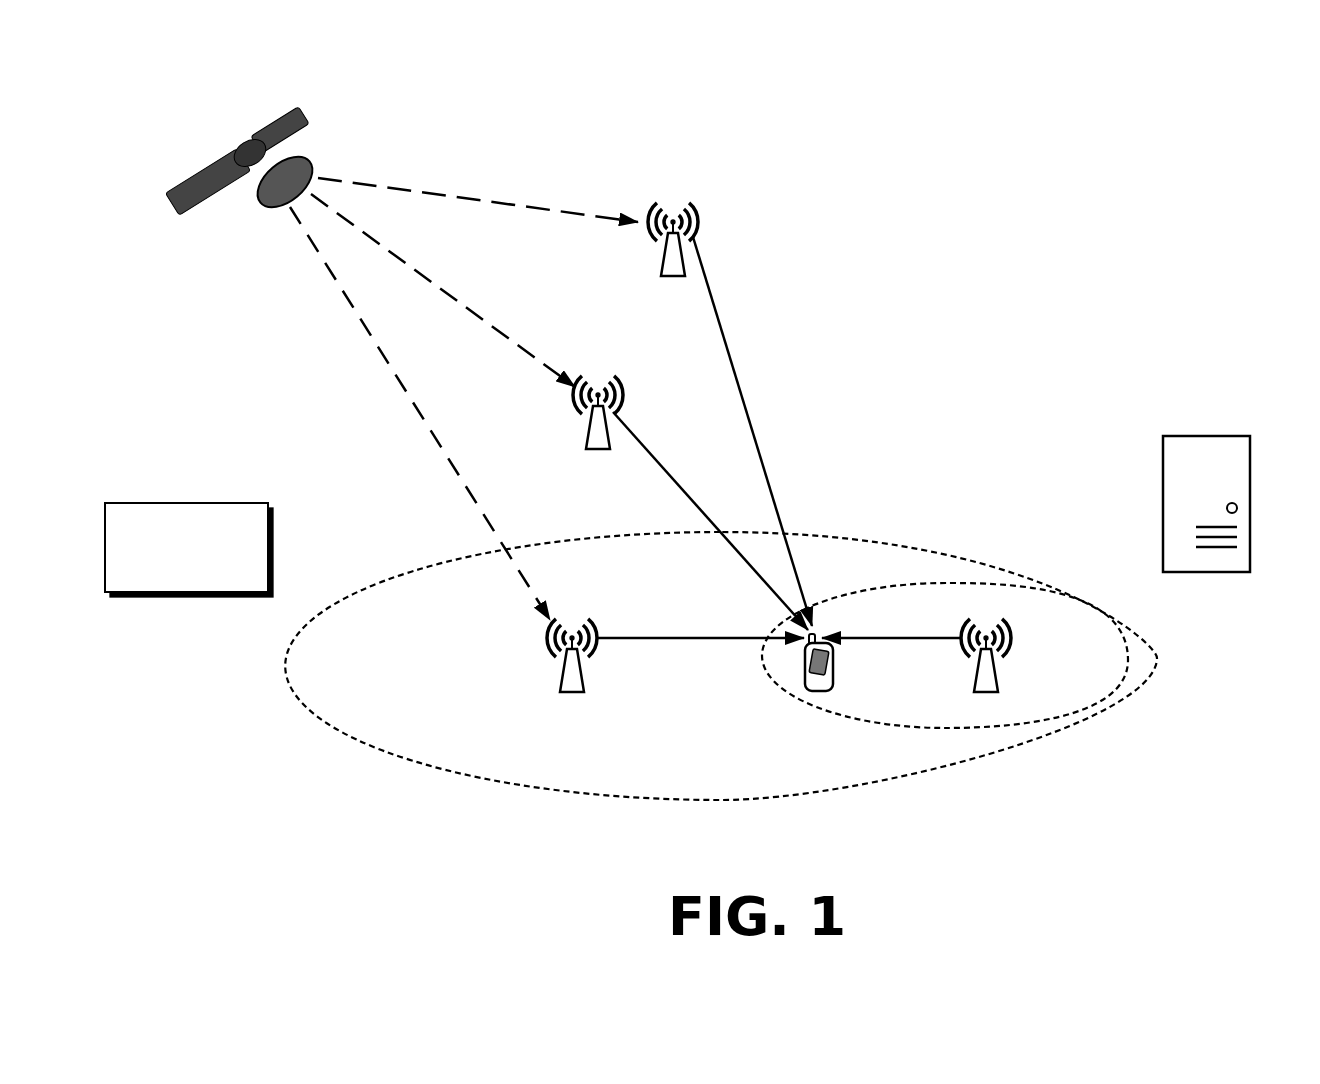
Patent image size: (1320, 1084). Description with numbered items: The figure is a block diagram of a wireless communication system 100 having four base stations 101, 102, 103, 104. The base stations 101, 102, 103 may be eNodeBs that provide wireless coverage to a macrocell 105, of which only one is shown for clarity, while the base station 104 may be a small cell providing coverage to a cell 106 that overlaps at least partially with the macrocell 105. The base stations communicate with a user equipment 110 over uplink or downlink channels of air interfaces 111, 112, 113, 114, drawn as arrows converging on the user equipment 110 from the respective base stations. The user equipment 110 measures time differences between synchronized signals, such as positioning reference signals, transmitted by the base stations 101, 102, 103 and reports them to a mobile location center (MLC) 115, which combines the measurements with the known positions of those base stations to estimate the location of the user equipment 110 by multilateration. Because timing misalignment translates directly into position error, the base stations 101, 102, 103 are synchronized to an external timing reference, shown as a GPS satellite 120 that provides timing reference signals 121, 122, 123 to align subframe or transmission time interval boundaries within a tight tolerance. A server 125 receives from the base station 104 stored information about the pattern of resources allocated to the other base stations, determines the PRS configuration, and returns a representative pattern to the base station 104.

The wireless communication system 100 is at (1195, 177).
The base station 101 is at (572, 695).
The base station 102 is at (600, 452).
The base station 103 is at (680, 278).
The base station 104 is at (997, 682).
The macrocell 105 is at (455, 778).
The cell 106 is at (1157, 650).
The user equipment 110 is at (820, 695).
The air interface 111 is at (705, 640).
The air interface 112 is at (690, 488).
The air interface 113 is at (757, 440).
The air interface 114 is at (862, 640).
The mobile location center (MLC) 115 is at (187, 596).
The GPS satellite 120 is at (232, 148).
The timing reference signal 121 is at (366, 326).
The timing reference signal 122 is at (480, 322).
The timing reference signal 123 is at (497, 203).
The server 125 is at (1163, 503).